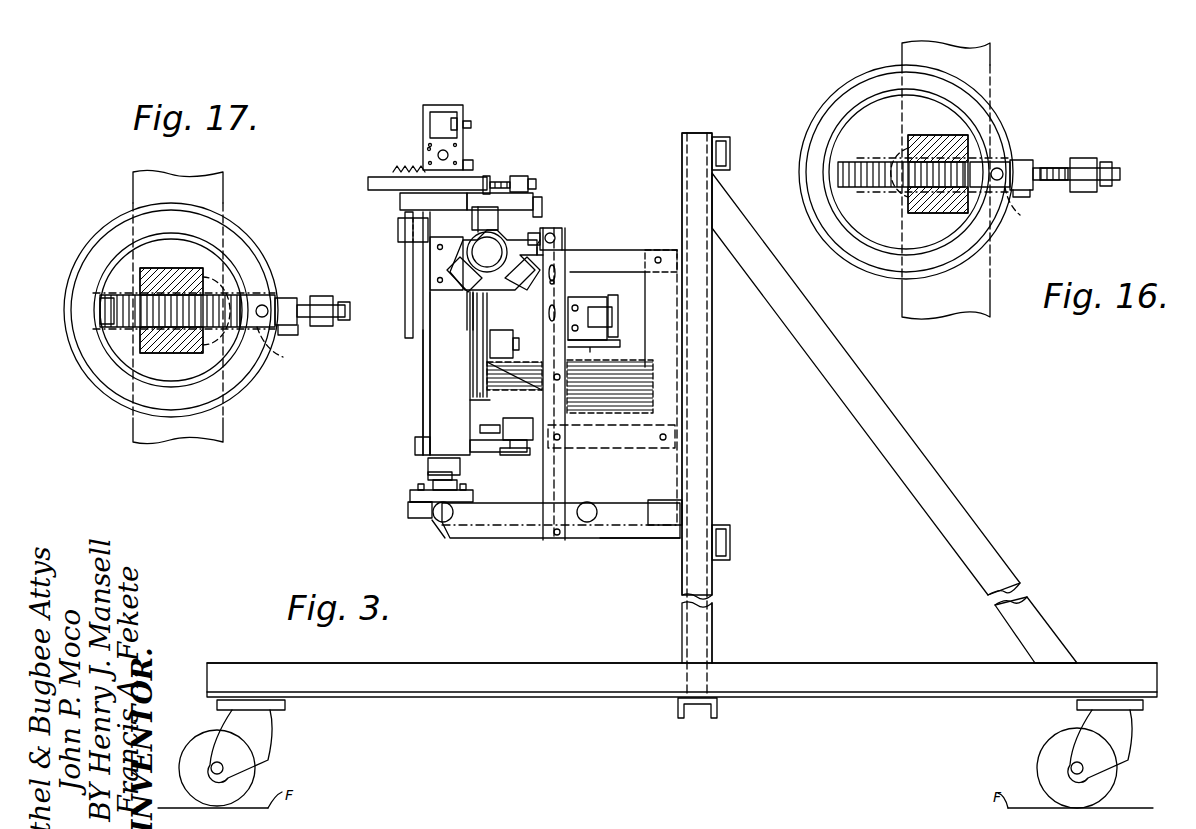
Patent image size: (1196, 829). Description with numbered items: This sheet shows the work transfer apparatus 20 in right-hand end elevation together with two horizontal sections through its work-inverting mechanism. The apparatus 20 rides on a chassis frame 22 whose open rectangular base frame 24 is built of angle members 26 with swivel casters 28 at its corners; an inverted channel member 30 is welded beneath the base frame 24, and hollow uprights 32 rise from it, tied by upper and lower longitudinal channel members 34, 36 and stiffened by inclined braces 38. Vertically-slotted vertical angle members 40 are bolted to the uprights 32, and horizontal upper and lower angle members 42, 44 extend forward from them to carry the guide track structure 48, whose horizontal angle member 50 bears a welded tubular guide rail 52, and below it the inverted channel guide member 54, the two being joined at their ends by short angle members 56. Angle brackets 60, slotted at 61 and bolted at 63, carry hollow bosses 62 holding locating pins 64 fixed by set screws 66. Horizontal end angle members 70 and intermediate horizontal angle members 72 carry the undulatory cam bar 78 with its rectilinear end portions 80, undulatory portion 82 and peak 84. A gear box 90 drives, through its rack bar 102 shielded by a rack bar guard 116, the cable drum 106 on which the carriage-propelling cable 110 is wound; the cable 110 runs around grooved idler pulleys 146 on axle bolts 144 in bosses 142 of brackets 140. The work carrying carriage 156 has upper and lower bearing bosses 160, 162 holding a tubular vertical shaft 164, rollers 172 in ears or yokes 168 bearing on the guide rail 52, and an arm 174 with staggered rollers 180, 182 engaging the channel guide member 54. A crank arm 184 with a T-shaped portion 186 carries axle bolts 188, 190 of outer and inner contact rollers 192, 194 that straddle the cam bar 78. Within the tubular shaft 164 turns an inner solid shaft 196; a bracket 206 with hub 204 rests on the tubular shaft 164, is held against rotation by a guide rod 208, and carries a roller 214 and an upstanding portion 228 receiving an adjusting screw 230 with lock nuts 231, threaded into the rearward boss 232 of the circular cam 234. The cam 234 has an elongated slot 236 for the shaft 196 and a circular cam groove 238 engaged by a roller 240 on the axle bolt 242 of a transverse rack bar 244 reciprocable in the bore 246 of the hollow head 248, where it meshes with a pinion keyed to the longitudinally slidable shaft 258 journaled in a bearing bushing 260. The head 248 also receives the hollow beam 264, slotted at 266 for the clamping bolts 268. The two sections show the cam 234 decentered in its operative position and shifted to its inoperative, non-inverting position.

In FIG. 3, the apparatus 20 is at (624, 186).
In FIG. 3, the chassis frame 22 is at (704, 126).
In FIG. 3, the base frame 24 is at (1089, 659).
In FIG. 3, the angle members 26 is at (890, 663).
In FIG. 3, the swivel casters 28 is at (255, 760).
In FIG. 3, the inverted channel member 30 is at (717, 710).
In FIG. 3, the hollow uprights 32 is at (712, 340).
In FIG. 3, the upper longitudinal channel member 34 is at (730, 155).
In FIG. 3, the lower longitudinal channel member 36 is at (730, 548).
In FIG. 3, the inclined braces 38 is at (915, 455).
In FIG. 3, the vertical angle members 40 is at (677, 300).
In FIG. 3, the upper angle member 42 is at (628, 250).
In FIG. 3, the lower angle member 44 is at (620, 448).
In FIG. 3, the guide track structure 48 is at (492, 244).
In FIG. 3, the horizontal angle member 50 is at (530, 238).
In FIG. 3, the tubular guide rail 52 is at (467, 250).
In FIG. 3, the inverted channel guide member 54 is at (515, 420).
In FIG. 3, the short angle members 56 is at (565, 470).
In FIG. 3, the angle brackets 60 is at (558, 280).
In FIG. 3, the slot 61 is at (558, 310).
In FIG. 3, the hollow bosses 62 is at (556, 232).
In FIG. 3, the bolts 63 is at (558, 270).
In FIG. 3, the locating pins 64 is at (540, 238).
In FIG. 3, the set screws 66 is at (537, 240).
In FIG. 3, the horizontal end angle members 70 is at (482, 538).
In FIG. 3, the intermediate horizontal angle members 72 is at (625, 538).
In FIG. 3, the undulatory cam bar 78 is at (432, 525).
In FIG. 3, the rectilinear end portions 80 is at (441, 522).
In FIG. 3, the undulatory portion 82 is at (527, 538).
In FIG. 3, the peak 84 is at (597, 510).
In FIG. 3, the gear box 90 is at (605, 340).
In FIG. 3, the rack bar 102 is at (605, 318).
In FIG. 3, the cable drum 106 is at (490, 405).
In FIG. 3, the carriage-propelling cable 110 is at (480, 390).
In FIG. 3, the rack bar guard 116 is at (613, 297).
In FIG. 3, the brackets 140 is at (503, 367).
In FIG. 3, the bosses 142 is at (503, 330).
In FIG. 3, the axle bolts 144 is at (473, 342).
In FIG. 3, the grooved idler pulleys 146 is at (477, 378).
In FIG. 17, the work carrying carriage 156 is at (232, 197).
In FIG. 16, the work carrying carriage 156 is at (995, 291).
In FIG. 3, the work carrying carriage 156 is at (434, 365).
In FIG. 3, the bearing boss 160 is at (398, 228).
In FIG. 3, the bearing boss 162 is at (415, 448).
In FIG. 3, the tubular vertical shaft 164 is at (423, 393).
In FIG. 3, the ears or yokes 168 is at (478, 215).
In FIG. 3, the rollers 172 is at (478, 228).
In FIG. 3, the arm 174 is at (475, 452).
In FIG. 3, the roller 180 is at (512, 455).
In FIG. 3, the roller 182 is at (494, 427).
In FIG. 3, the crank arm 184 is at (428, 476).
In FIG. 3, the T-shaped portion 186 is at (410, 500).
In FIG. 3, the axle bolt 188 is at (418, 488).
In FIG. 3, the axle bolt 190 is at (457, 485).
In FIG. 3, the outer contact roller 192 is at (408, 512).
In FIG. 3, the inner contact roller 194 is at (473, 496).
In FIG. 17, the inner solid shaft 196 is at (172, 355).
In FIG. 16, the inner solid shaft 196 is at (937, 213).
In FIG. 3, the inner solid shaft 196 is at (428, 466).
In FIG. 3, the hub 204 is at (428, 203).
In FIG. 17, the bracket 206 is at (298, 332).
In FIG. 16, the bracket 206 is at (1030, 195).
In FIG. 3, the bracket 206 is at (487, 203).
In FIG. 3, the guide rod 208 is at (405, 320).
In FIG. 3, the roller 214 is at (540, 197).
In FIG. 17, the upstanding portion 228 is at (322, 298).
In FIG. 16, the upstanding portion 228 is at (1085, 158).
In FIG. 3, the upstanding portion 228 is at (520, 176).
In FIG. 17, the adjusting screw 230 is at (345, 317).
In FIG. 16, the adjusting screw 230 is at (1045, 168).
In FIG. 3, the adjusting screw 230 is at (497, 176).
In FIG. 17, the lock nuts 231 is at (344, 314).
In FIG. 16, the lock nuts 231 is at (1106, 162).
In FIG. 3, the lock nuts 231 is at (536, 180).
In FIG. 17, the rearward boss 232 is at (288, 298).
In FIG. 16, the rearward boss 232 is at (1020, 160).
In FIG. 3, the rearward boss 232 is at (495, 179).
In FIG. 17, the circular cam 234 is at (86, 391).
In FIG. 16, the circular cam 234 is at (821, 89).
In FIG. 3, the circular cam 234 is at (363, 186).
In FIG. 17, the elongated slot 236 is at (210, 288).
In FIG. 16, the elongated slot 236 is at (895, 152).
In FIG. 17, the circular cam groove 238 is at (238, 388).
In FIG. 16, the circular cam groove 238 is at (812, 148).
In FIG. 17, the roller 240 is at (283, 360).
In FIG. 16, the roller 240 is at (1014, 232).
In FIG. 17, the axle bolt 242 is at (268, 295).
In FIG. 16, the axle bolt 242 is at (1000, 190).
In FIG. 3, the axle bolt 242 is at (470, 160).
In FIG. 17, the transverse rack bar 244 is at (100, 311).
In FIG. 16, the transverse rack bar 244 is at (838, 175).
In FIG. 3, the transverse rack bar 244 is at (393, 170).
In FIG. 17, the bore 246 is at (125, 297).
In FIG. 17, the hollow head 248 is at (163, 268).
In FIG. 16, the hollow head 248 is at (926, 135).
In FIG. 3, the hollow head 248 is at (423, 126).
In FIG. 3, the longitudinally slidable shaft 258 is at (448, 155).
In FIG. 3, the bearing bushing 260 is at (425, 149).
In FIG. 3, the hollow beam 264 is at (440, 112).
In FIG. 3, the longitudinal slot 266 is at (457, 120).
In FIG. 3, the clamping bolts 268 is at (471, 124).